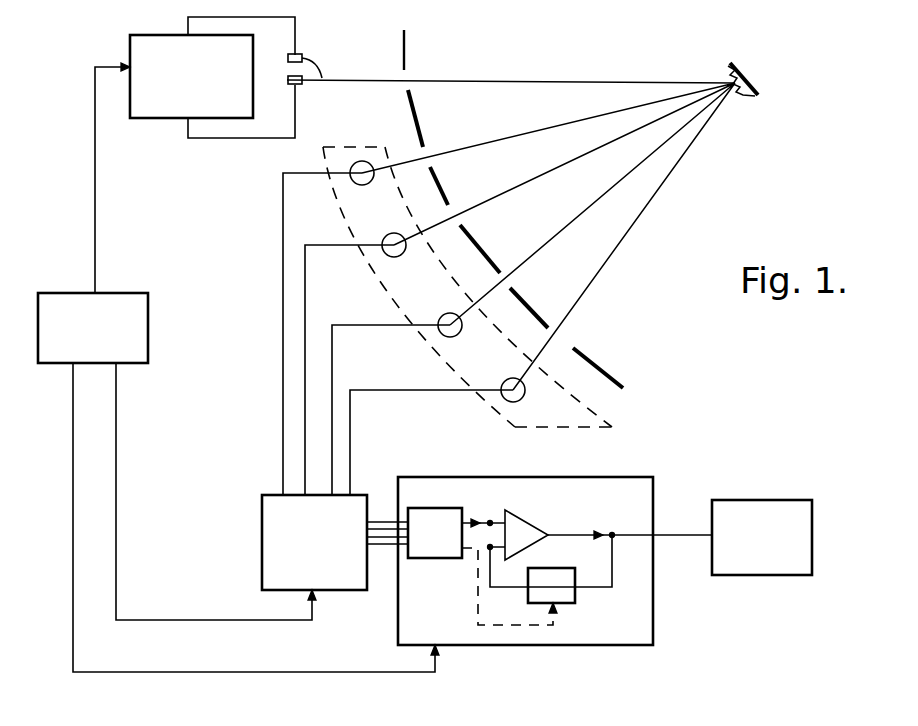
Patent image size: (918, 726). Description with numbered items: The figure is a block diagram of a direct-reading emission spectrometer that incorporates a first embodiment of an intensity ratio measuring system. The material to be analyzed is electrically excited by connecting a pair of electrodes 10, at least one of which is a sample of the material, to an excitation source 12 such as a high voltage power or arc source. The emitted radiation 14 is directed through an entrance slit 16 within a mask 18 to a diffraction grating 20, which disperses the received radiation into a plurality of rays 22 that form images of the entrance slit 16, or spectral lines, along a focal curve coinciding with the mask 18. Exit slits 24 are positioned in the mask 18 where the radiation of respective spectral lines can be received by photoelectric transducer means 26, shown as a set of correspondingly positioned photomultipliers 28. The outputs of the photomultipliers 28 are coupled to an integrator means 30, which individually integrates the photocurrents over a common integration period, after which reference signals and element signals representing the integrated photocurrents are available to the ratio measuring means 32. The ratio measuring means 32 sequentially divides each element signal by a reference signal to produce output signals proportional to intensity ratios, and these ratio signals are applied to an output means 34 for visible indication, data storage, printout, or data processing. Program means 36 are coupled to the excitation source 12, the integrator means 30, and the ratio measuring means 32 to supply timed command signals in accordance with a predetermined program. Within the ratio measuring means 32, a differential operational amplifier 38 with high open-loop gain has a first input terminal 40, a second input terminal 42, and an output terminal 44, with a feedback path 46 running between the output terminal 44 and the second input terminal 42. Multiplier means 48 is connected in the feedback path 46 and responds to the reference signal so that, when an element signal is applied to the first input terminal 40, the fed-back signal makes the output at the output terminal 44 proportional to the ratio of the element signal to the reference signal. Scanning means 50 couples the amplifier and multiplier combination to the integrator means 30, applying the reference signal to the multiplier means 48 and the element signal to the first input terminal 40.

The electrodes 10 is at (302, 82).
The excitation source 12 is at (150, 108).
The emitted radiation 14 is at (545, 80).
The entrance slit 16 is at (413, 87).
The mask 18 is at (405, 48).
The diffraction grating 20 is at (745, 62).
The rays 22 is at (500, 140).
The exit slits 24 is at (440, 165).
The photoelectric transducer means 26 is at (335, 147).
The photomultipliers 28 is at (385, 240).
The integrator means 30 is at (262, 522).
The ratio measuring means 32 is at (653, 632).
The output means 34 is at (805, 505).
The program means 36 is at (141, 353).
The differential operational amplifier 38 is at (530, 520).
The first input terminal 40 is at (490, 520).
The second input terminal 42 is at (492, 550).
The output terminal 44 is at (612, 530).
The feedback path 46 is at (612, 560).
The multiplier means 48 is at (570, 595).
The scanning means 50 is at (446, 558).